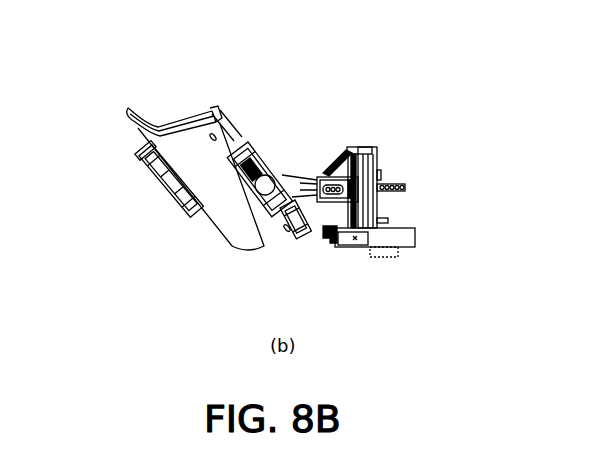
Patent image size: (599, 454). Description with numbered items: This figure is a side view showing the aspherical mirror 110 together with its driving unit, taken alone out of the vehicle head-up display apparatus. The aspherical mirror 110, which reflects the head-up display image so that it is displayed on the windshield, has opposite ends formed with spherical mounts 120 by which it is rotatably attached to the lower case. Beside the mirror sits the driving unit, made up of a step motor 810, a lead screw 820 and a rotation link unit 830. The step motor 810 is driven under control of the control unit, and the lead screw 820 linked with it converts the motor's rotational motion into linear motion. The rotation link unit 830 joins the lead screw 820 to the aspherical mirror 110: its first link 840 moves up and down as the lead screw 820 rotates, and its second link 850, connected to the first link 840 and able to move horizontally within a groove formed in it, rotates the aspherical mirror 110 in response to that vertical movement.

The aspherical mirror 110 is at (153, 116).
The spherical mounts 120 is at (150, 190).
The step motor 810 is at (340, 249).
The lead screw 820 is at (375, 153).
The rotation link unit 830 is at (285, 141).
The first link 840 is at (320, 170).
The second link 850 is at (263, 151).